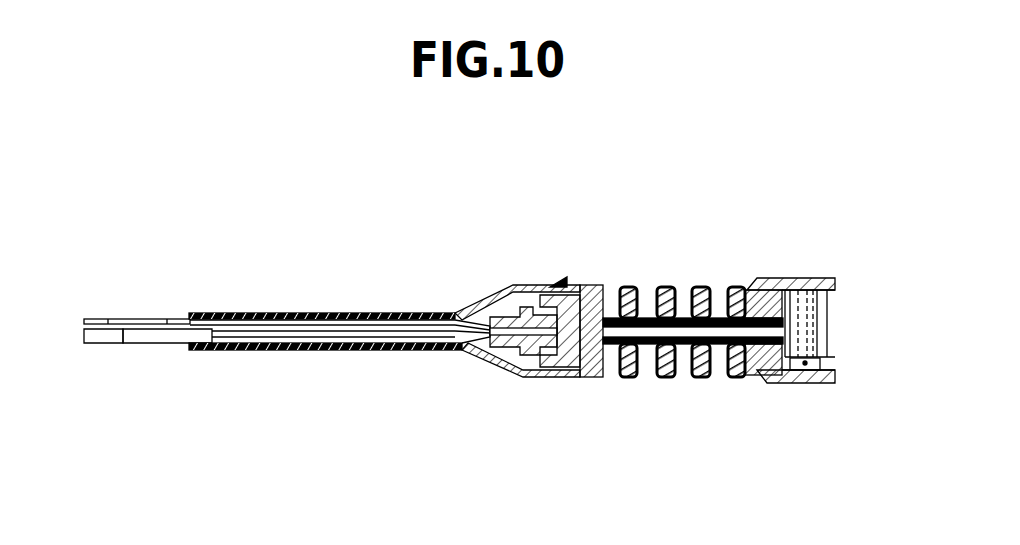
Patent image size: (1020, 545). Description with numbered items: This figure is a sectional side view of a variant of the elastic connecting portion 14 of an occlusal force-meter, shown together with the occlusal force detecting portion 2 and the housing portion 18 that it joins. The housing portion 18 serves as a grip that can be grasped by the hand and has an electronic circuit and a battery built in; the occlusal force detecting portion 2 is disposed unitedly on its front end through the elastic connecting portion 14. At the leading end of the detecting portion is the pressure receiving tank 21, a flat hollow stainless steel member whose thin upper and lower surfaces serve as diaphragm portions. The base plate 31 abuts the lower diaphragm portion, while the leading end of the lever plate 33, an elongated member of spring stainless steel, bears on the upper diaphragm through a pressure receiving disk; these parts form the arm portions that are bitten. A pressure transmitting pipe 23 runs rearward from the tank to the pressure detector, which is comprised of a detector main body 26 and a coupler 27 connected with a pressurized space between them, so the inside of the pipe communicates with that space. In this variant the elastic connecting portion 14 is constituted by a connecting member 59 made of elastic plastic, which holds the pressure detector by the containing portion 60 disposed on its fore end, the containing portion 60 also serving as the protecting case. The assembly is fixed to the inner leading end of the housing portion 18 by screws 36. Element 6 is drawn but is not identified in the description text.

The occlusal force detecting portion 2 is at (278, 303).
The ultrasonic probe 6 is at (147, 303).
The elastic connecting portion 14 is at (638, 285).
The housing portion 18 is at (793, 278).
The pressure receiving tank 21 is at (125, 345).
The pressure transmitting pipe 23 is at (437, 350).
The detector main body 26 is at (533, 375).
The coupler 27 is at (500, 372).
The base plate 31 is at (172, 345).
The lever plate 33 is at (320, 313).
The screws 36 is at (818, 380).
The connecting member 59 is at (665, 378).
The containing portion 60 is at (570, 378).